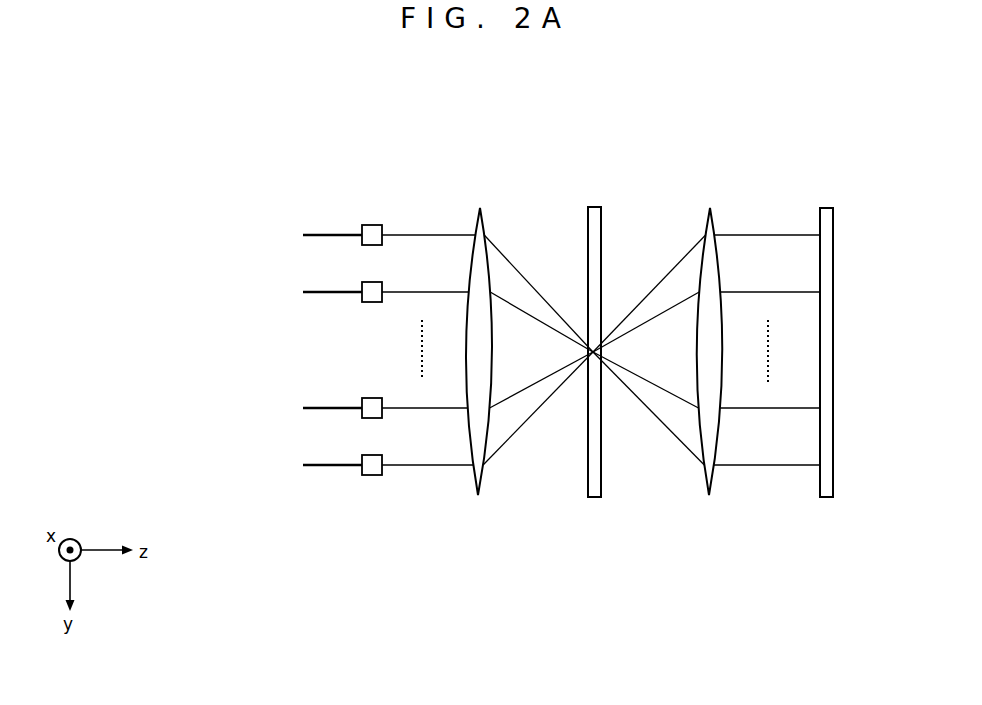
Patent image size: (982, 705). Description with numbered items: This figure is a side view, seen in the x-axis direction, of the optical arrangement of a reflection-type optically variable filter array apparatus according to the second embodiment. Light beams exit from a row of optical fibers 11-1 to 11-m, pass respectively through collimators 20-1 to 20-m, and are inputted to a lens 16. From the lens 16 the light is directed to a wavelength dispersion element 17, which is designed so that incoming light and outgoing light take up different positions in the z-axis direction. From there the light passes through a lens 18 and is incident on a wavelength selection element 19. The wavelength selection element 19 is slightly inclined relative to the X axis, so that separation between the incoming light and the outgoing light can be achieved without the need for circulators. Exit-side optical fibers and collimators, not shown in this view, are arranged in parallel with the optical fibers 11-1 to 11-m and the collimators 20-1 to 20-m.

The optical fiber 11-1 is at (328, 233).
The optical fiber 11-m is at (328, 467).
The collimator 20-1 is at (383, 227).
The collimator 20-m is at (382, 475).
The lens 16 is at (485, 220).
The wavelength dispersion element 17 is at (602, 218).
The lens 18 is at (715, 220).
The wavelength selection element 19 is at (833, 218).